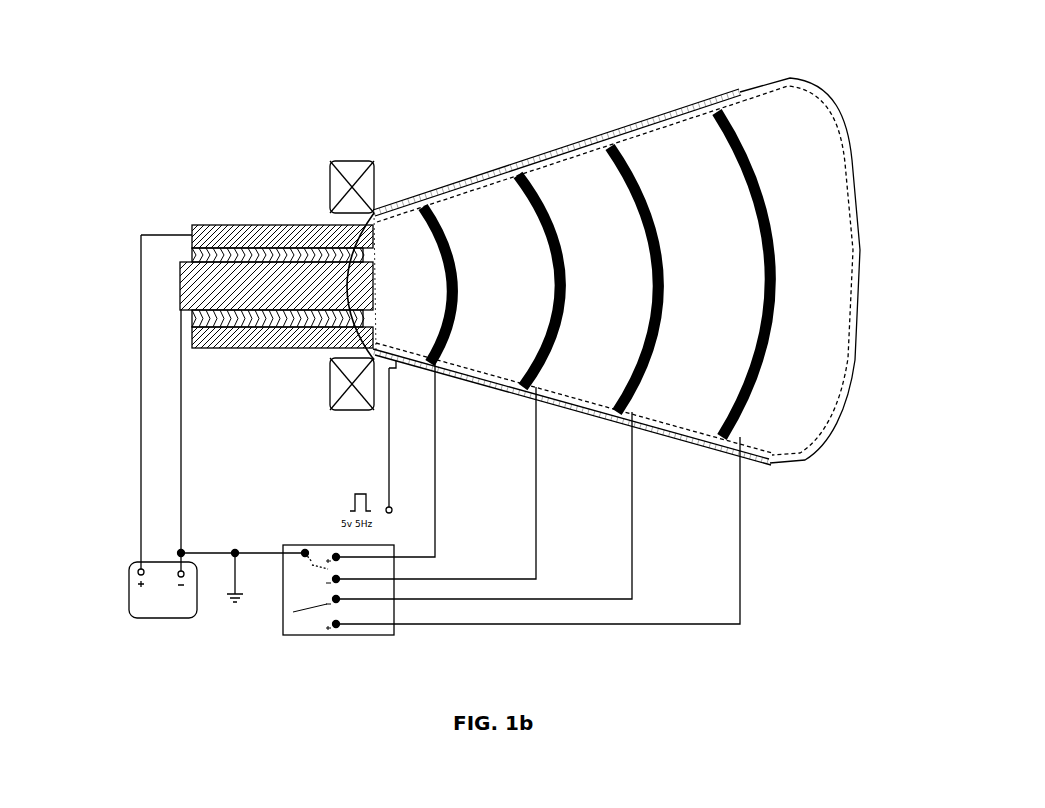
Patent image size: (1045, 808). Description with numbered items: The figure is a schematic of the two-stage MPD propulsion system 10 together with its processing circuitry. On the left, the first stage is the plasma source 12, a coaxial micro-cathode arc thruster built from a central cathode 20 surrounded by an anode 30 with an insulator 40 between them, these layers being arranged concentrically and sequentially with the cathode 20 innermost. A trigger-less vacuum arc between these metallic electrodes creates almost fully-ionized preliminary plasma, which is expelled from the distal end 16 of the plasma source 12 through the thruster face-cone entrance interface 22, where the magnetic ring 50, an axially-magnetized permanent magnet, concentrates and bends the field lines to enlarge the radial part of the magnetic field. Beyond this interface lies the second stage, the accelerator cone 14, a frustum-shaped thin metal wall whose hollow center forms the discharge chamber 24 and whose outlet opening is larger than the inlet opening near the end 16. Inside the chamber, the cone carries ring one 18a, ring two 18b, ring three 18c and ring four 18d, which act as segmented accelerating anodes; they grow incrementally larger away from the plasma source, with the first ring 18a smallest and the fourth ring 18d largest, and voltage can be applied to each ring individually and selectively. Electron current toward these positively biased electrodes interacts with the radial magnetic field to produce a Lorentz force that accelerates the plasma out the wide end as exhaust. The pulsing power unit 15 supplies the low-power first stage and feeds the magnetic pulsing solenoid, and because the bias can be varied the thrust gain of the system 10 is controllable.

The plasma thruster 10 is at (133, 138).
The plasma source 12 is at (213, 365).
The accelerator cone 14 is at (828, 100).
The pulsing power unit (PPU) 15 is at (140, 618).
The distal end of the plasma source 16 is at (337, 340).
The ring one 18a is at (442, 217).
The ring two 18b is at (541, 192).
The ring three 18c is at (637, 163).
The ring four 18d is at (747, 140).
The cathode 20 is at (190, 306).
The thruster face-cone entrance interface 22 is at (378, 206).
The discharge chamber 24 is at (833, 430).
The anode 30 is at (193, 227).
The insulator 40 is at (193, 252).
The magnetic ring 50 is at (338, 183).